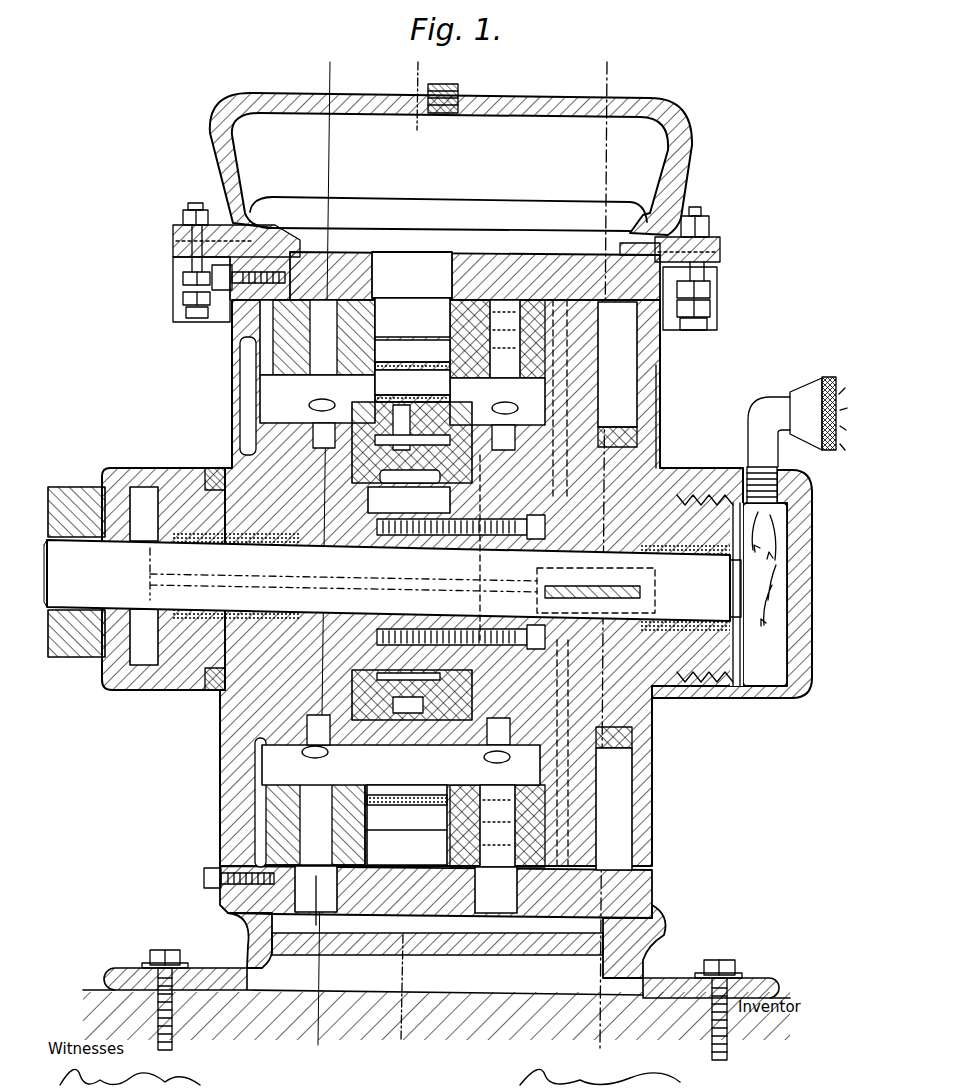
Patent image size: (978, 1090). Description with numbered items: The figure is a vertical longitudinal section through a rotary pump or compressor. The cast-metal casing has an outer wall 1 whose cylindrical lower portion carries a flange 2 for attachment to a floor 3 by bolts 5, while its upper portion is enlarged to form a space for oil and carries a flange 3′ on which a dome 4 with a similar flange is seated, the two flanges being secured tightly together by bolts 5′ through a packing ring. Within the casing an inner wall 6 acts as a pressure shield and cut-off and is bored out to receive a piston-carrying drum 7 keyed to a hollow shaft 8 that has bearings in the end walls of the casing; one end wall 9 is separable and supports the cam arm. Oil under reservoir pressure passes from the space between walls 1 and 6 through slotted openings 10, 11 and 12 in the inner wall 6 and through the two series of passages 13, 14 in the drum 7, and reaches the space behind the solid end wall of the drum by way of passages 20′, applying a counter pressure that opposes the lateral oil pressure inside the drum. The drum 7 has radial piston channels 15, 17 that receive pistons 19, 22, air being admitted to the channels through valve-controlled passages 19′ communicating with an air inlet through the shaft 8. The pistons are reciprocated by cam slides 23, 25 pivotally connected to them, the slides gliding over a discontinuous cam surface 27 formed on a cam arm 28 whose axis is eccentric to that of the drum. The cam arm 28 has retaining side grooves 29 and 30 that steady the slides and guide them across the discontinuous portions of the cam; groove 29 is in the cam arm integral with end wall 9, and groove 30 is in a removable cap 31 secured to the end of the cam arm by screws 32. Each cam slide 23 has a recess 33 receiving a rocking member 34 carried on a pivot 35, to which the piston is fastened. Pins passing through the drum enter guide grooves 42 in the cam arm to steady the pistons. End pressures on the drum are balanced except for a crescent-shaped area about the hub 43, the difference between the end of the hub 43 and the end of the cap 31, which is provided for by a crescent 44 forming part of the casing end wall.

The outer wall 1 is at (415, 950).
The flange 2 is at (398, 78).
The floor 3 is at (436, 553).
The flange 3' is at (483, 274).
The dome 4 is at (582, 78).
The bolts 5 is at (435, 989).
The cover bolt 5' is at (463, 266).
The inner wall 6 is at (525, 265).
The piston-carrying drum 7 is at (560, 403).
The shaft 8 is at (80, 556).
The end wall 9 is at (243, 396).
The slotted opening 10 is at (414, 262).
The slotted opening 11 is at (310, 893).
The slotted opening 12 is at (496, 890).
The passages 13 is at (318, 402).
The passages 14 is at (685, 830).
The piston channel 15 is at (382, 848).
The piston channel 17 is at (400, 312).
The piston 19 is at (497, 826).
The valve-controlled passages 19' is at (573, 590).
The passages 20' is at (545, 611).
The piston 22 is at (412, 355).
The cam slide 23 is at (326, 747).
The cam slide 25 is at (432, 410).
The cam surface 27 is at (390, 670).
The cam arm 28 is at (227, 693).
The retaining side groove 29 is at (330, 472).
The retaining side groove 30 is at (458, 444).
The removable cap 31 is at (527, 448).
The screws 32 is at (542, 554).
The recess 33 is at (456, 513).
The rocking member 34 is at (383, 412).
The pivot 35 is at (382, 440).
The guide grooves 42 is at (322, 432).
The hub 43 is at (625, 476).
The crescent 44 is at (628, 422).